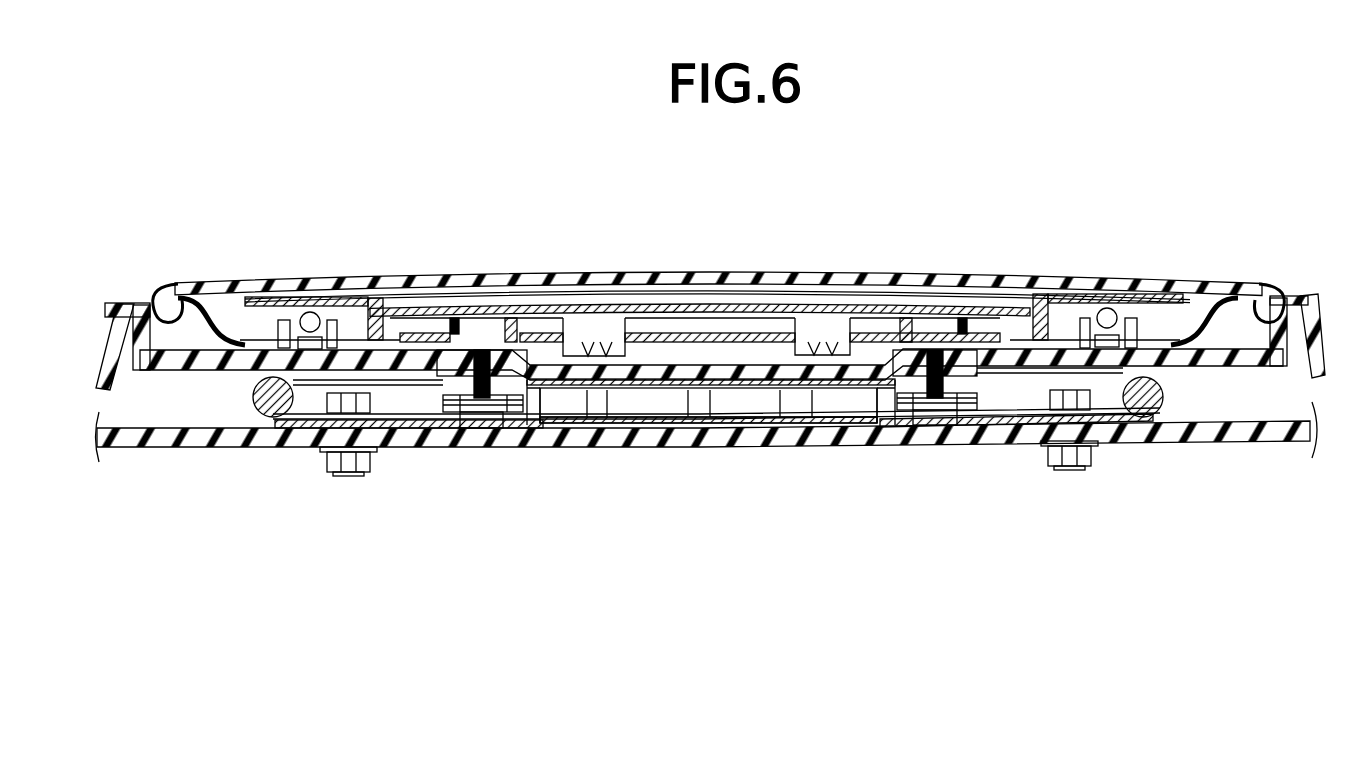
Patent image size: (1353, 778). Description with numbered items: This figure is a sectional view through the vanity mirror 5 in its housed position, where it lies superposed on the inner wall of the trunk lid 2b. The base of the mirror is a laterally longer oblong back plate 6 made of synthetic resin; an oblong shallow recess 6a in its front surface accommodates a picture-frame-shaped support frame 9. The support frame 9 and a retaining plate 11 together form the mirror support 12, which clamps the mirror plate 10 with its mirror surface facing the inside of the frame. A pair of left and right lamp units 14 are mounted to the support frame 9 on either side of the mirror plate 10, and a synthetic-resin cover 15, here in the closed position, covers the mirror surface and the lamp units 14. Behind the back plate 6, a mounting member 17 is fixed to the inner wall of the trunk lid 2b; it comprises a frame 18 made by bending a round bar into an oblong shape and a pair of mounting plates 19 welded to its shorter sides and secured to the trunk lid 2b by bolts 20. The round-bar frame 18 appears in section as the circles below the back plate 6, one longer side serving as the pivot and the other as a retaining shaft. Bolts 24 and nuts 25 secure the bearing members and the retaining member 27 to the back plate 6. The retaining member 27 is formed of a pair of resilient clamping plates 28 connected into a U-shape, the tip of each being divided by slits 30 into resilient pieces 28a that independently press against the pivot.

The trunk lid 2b is at (1173, 440).
The vanity mirror 5 is at (945, 268).
The back plate 6 is at (1207, 365).
The recess 6a is at (1270, 296).
The support frame 9 is at (378, 300).
The mirror plate 10 is at (645, 306).
The retaining plate 11 is at (508, 302).
The mirror support 12 is at (496, 187).
The lamp unit 14 is at (292, 300).
The cover 15 is at (727, 292).
The mounting member 17 is at (254, 409).
The frame 18 is at (271, 420).
The mounting plate 19 is at (388, 420).
The bolt 20 is at (347, 477).
The bolt 24 is at (484, 428).
The nut 25 is at (511, 349).
The retaining member 27 is at (562, 424).
The resilient clamping plate 28 is at (829, 383).
The resilient piece 28a is at (607, 392).
The slit 30 is at (527, 380).